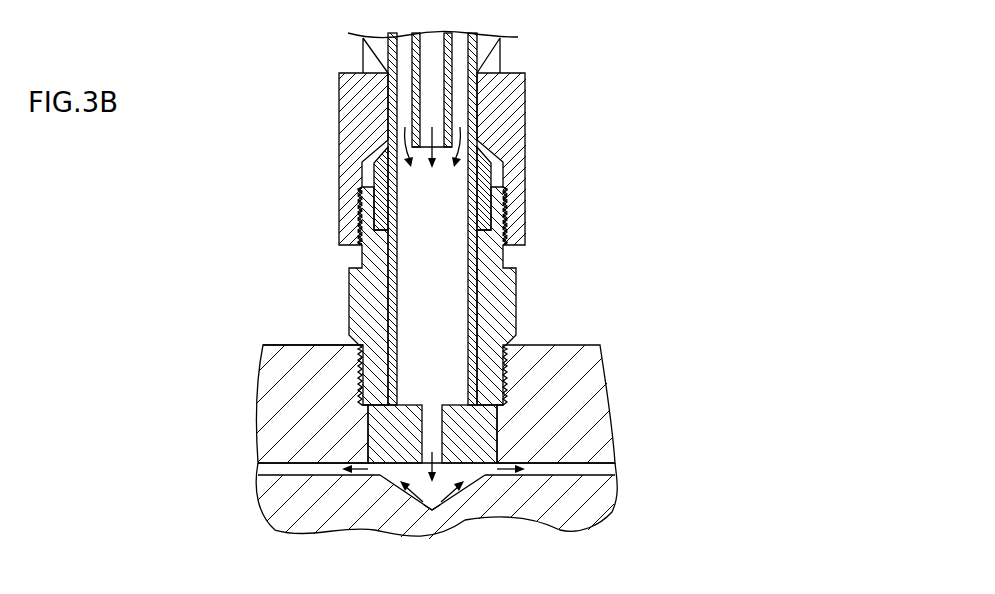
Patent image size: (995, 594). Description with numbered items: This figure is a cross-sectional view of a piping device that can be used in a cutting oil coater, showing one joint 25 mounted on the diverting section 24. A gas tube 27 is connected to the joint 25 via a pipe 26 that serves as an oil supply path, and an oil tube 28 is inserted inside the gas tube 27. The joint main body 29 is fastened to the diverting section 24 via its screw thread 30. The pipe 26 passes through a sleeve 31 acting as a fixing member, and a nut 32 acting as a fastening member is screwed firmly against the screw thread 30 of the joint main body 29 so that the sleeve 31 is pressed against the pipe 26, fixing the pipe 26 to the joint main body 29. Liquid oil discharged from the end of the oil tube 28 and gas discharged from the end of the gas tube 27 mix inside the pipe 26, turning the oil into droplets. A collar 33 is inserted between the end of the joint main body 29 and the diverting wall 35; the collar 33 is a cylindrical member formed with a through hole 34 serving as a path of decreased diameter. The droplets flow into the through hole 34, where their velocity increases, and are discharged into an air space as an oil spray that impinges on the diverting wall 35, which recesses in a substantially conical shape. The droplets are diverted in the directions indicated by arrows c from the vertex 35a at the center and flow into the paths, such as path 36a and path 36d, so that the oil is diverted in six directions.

The diverting section 24 is at (283, 345).
The joint 25 is at (303, 157).
The pipe 26 is at (445, 289).
The gas tube 27 is at (363, 57).
The oil tube 28 is at (451, 60).
The joint main body 29 is at (515, 289).
The screw thread 30 is at (562, 360).
The sleeve 31 is at (492, 173).
The nut 32 is at (525, 110).
The collar 33 is at (478, 452).
The through hole 34 is at (437, 425).
The diverting wall 35 is at (395, 504).
The vertex 35a is at (431, 511).
The path 36a is at (258, 508).
The path 36d is at (603, 517).
The arrows c is at (420, 493).